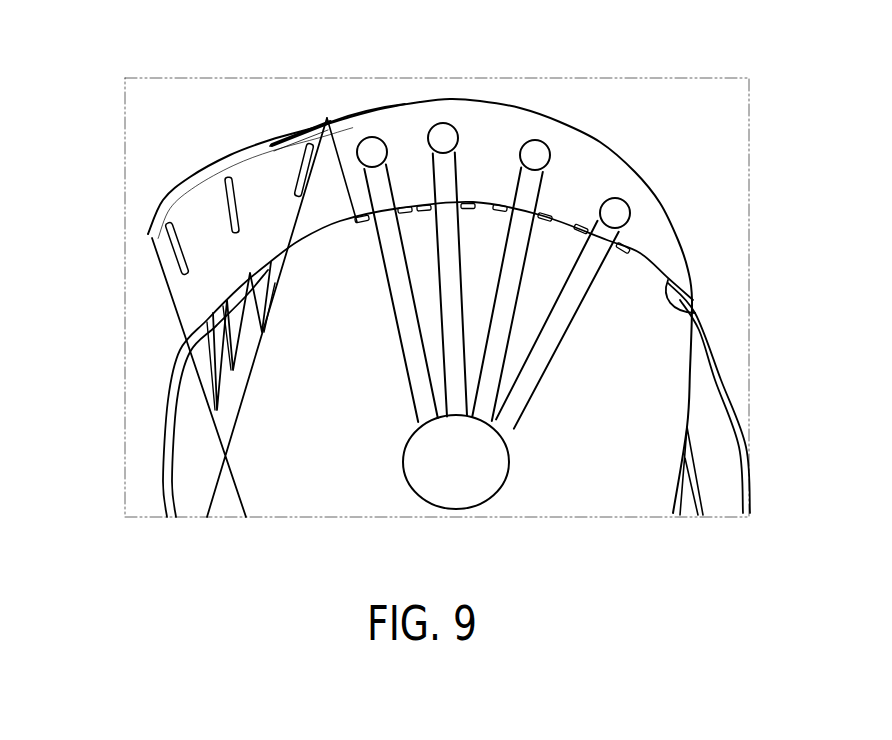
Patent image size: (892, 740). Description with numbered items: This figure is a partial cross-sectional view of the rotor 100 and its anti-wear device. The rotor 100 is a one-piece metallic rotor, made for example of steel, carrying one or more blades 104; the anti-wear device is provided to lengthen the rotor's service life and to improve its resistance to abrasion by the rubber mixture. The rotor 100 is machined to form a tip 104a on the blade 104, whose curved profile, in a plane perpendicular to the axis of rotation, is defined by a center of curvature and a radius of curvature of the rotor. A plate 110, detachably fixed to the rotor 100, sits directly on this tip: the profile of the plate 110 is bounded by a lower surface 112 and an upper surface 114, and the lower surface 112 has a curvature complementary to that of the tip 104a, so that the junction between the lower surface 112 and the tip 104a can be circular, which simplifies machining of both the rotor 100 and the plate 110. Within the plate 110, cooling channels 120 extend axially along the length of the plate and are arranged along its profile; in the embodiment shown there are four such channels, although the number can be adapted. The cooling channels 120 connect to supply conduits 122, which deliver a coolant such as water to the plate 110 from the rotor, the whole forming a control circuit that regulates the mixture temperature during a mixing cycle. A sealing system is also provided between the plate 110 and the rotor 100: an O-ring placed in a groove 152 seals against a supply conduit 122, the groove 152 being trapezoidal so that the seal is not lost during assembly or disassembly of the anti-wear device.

The rotor 100 is at (177, 137).
The blade 104 is at (230, 435).
The tip of the blade 104a is at (270, 272).
The plate 110 is at (650, 225).
The lower surface 112 is at (695, 313).
The upper surface 114 is at (617, 157).
The cooling channels 120 is at (614, 210).
The supply conduits 122 is at (524, 430).
The groove 152 is at (297, 133).